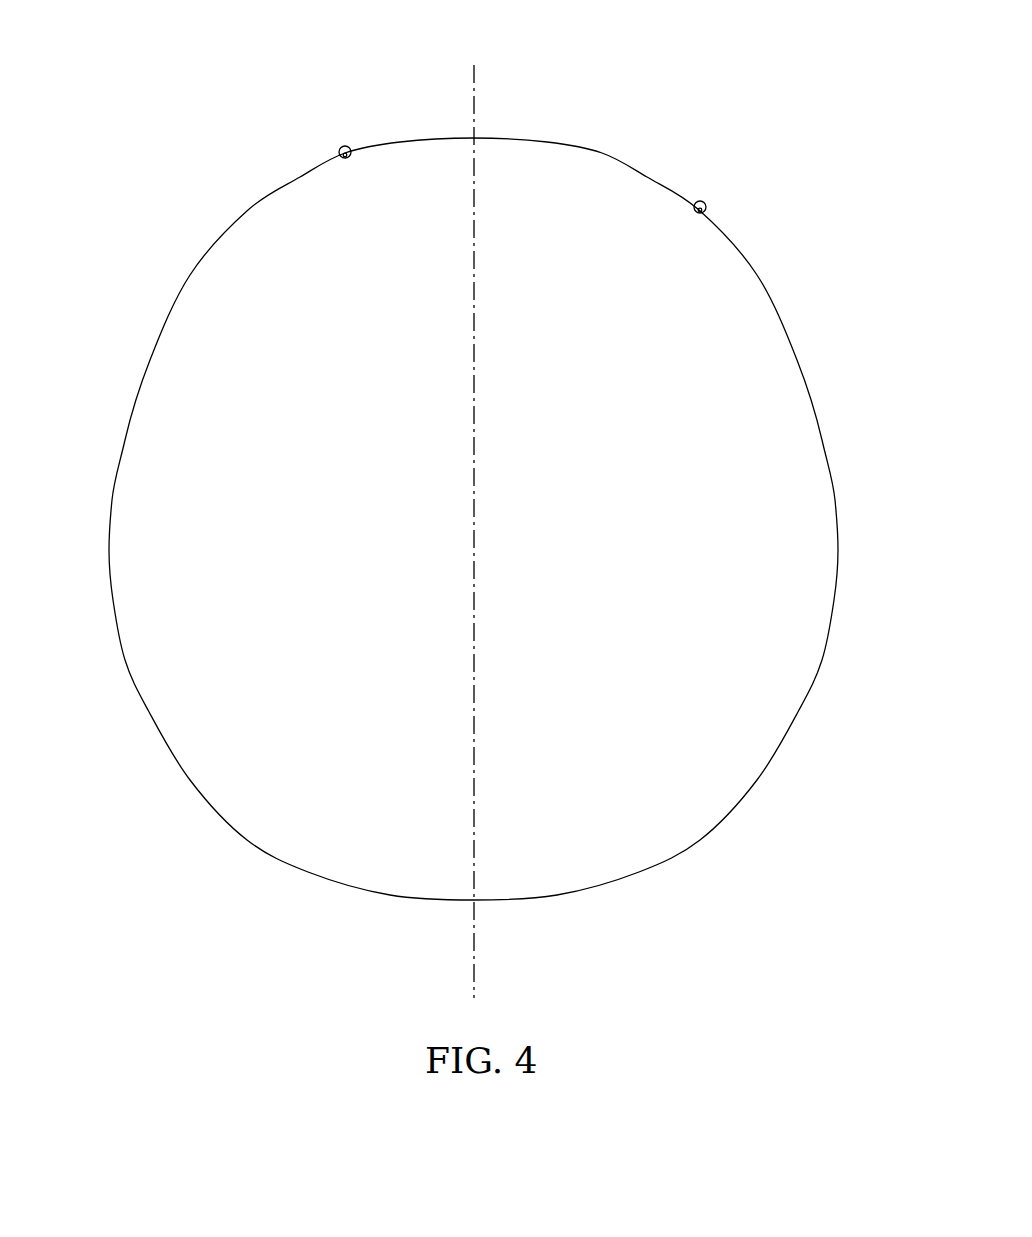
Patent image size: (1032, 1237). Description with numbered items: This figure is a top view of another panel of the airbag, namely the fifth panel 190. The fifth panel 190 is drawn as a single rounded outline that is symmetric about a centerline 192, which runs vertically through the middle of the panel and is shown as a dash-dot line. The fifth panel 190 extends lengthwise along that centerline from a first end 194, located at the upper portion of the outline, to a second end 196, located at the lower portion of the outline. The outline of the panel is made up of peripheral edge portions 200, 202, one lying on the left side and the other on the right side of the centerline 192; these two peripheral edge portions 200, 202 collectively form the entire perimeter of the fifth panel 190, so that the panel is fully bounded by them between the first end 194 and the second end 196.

The fifth panel 190 is at (682, 160).
The centerline 192 is at (476, 100).
The first end 194 is at (215, 183).
The second end 196 is at (283, 905).
The peripheral edge portion 200 is at (108, 543).
The peripheral edge portion 202 is at (840, 520).